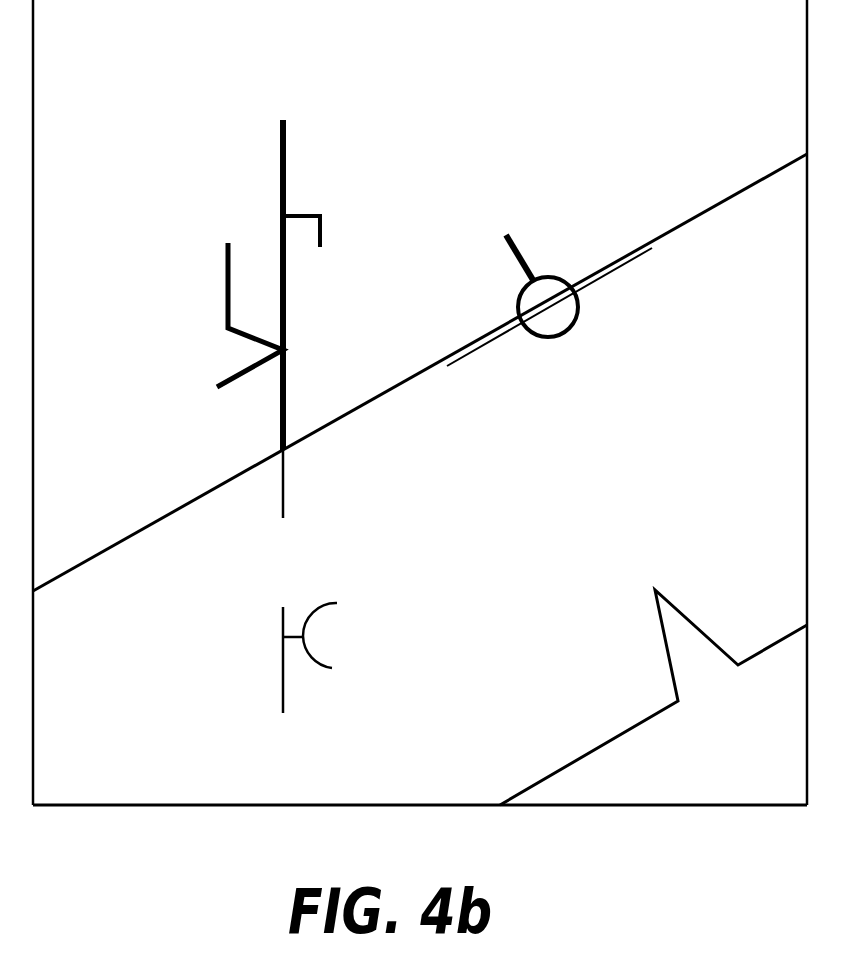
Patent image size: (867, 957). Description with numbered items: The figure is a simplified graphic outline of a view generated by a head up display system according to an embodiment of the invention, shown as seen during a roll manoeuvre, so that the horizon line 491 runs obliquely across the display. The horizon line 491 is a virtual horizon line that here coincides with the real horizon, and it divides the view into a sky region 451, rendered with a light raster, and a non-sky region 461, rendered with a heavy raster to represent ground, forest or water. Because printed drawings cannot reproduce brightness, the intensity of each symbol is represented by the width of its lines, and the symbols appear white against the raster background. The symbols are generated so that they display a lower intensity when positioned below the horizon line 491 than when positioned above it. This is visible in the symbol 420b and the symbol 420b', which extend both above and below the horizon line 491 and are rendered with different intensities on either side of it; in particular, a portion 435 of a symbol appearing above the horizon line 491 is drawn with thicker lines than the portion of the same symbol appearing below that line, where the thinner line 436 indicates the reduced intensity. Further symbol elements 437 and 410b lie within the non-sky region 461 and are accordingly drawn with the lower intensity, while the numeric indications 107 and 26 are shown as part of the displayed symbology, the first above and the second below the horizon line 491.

The sky region 451 is at (142, 66).
The non-sky region 461 is at (113, 682).
The horizon line 491 is at (745, 187).
The symbol 420b is at (549, 307).
The symbol 420b' is at (542, 259).
The symbol portion 435 is at (283, 392).
The marking line below surface 436 is at (283, 485).
The marking symbol with arc 437 is at (328, 667).
The zigzag line 410b is at (687, 617).
The marking text 107 is at (130, 357).
The marking text 26 is at (633, 556).